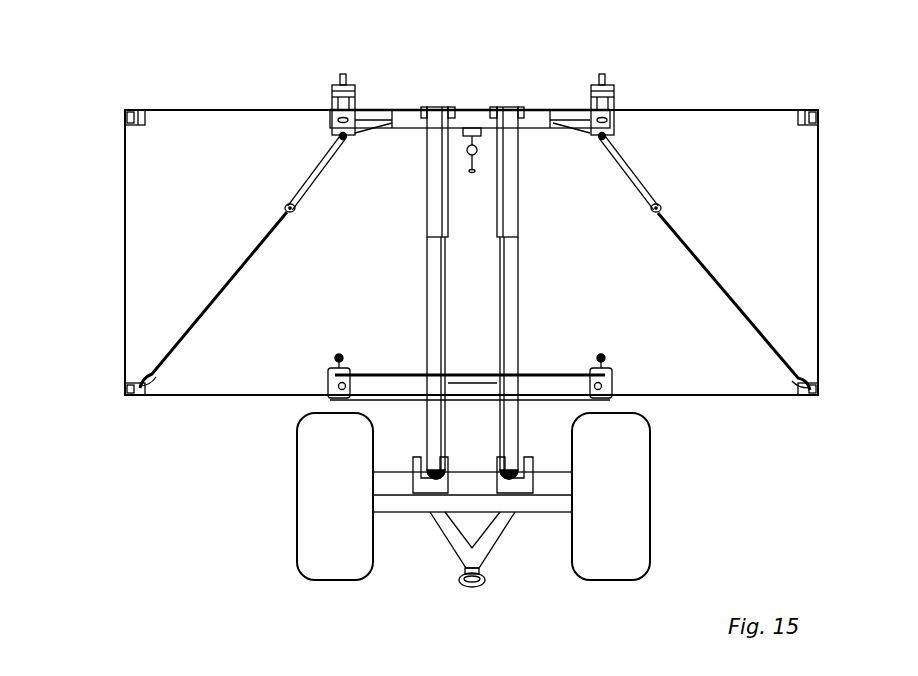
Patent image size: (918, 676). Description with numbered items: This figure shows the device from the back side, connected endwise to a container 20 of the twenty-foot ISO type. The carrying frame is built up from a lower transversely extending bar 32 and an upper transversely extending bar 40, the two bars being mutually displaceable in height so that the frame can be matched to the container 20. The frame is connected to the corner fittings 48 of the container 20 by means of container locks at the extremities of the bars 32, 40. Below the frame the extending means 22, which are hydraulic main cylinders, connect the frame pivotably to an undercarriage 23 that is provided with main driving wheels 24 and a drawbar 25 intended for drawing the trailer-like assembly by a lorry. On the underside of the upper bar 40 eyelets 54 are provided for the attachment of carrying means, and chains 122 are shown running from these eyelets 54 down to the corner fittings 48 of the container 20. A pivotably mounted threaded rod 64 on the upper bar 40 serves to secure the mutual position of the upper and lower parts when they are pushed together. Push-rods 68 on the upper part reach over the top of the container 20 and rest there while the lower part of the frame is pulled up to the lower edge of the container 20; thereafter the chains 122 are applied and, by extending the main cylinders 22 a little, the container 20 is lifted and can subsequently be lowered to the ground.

The container 20 is at (366, 268).
The extending means (hydraulic main cylinders) 22 is at (432, 415).
The undercarriage 23 is at (403, 516).
The main driving wheels 24 is at (310, 487).
The drawbar 25 is at (487, 532).
The transversely extending bar 32 is at (330, 396).
The transversely extending bar 40 is at (403, 118).
The corner fittings 48 is at (125, 113).
The eyelets 54 is at (340, 130).
The threaded rod 64 is at (477, 142).
The push-rod 68 is at (326, 86).
The chains 122 is at (223, 288).